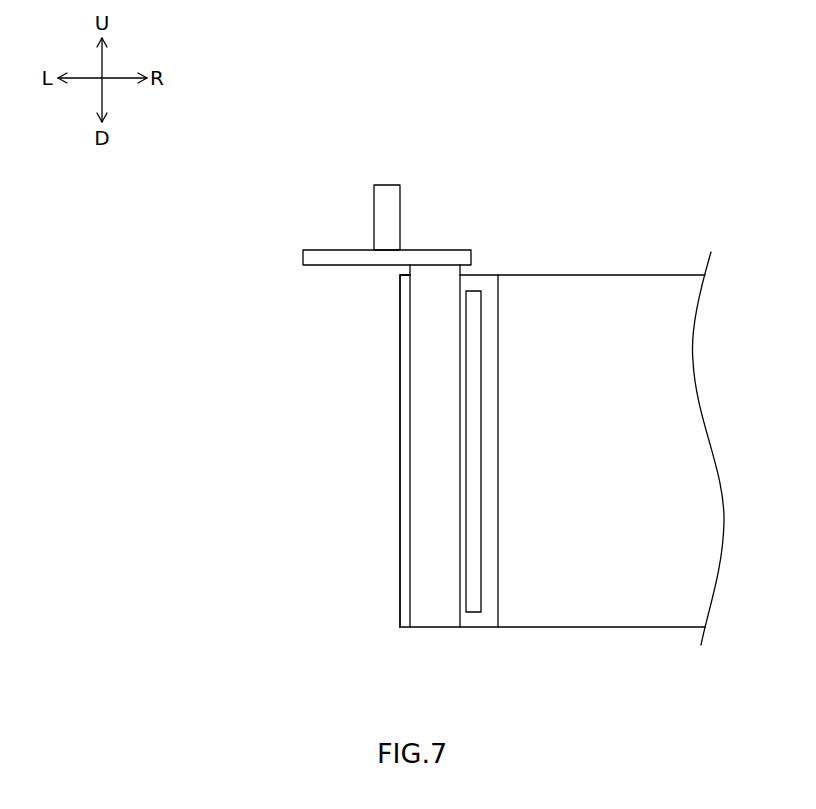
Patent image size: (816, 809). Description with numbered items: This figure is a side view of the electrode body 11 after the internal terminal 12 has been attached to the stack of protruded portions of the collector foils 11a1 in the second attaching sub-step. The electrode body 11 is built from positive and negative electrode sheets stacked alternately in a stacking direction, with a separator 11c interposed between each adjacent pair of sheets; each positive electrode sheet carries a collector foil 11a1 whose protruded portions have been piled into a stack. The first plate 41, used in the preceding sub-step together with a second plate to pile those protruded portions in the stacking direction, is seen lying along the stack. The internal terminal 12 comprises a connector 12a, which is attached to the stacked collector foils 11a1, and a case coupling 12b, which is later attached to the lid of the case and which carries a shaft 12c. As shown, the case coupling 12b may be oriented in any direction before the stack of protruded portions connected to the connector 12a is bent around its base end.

The electrode body 11 is at (500, 437).
The collector foil 11a1 is at (400, 510).
The separator 11c is at (498, 609).
The internal terminal 12 is at (371, 361).
The connector 12a is at (410, 362).
The case coupling 12b is at (322, 250).
The shaft 12c is at (400, 222).
The first plate 41 is at (482, 489).